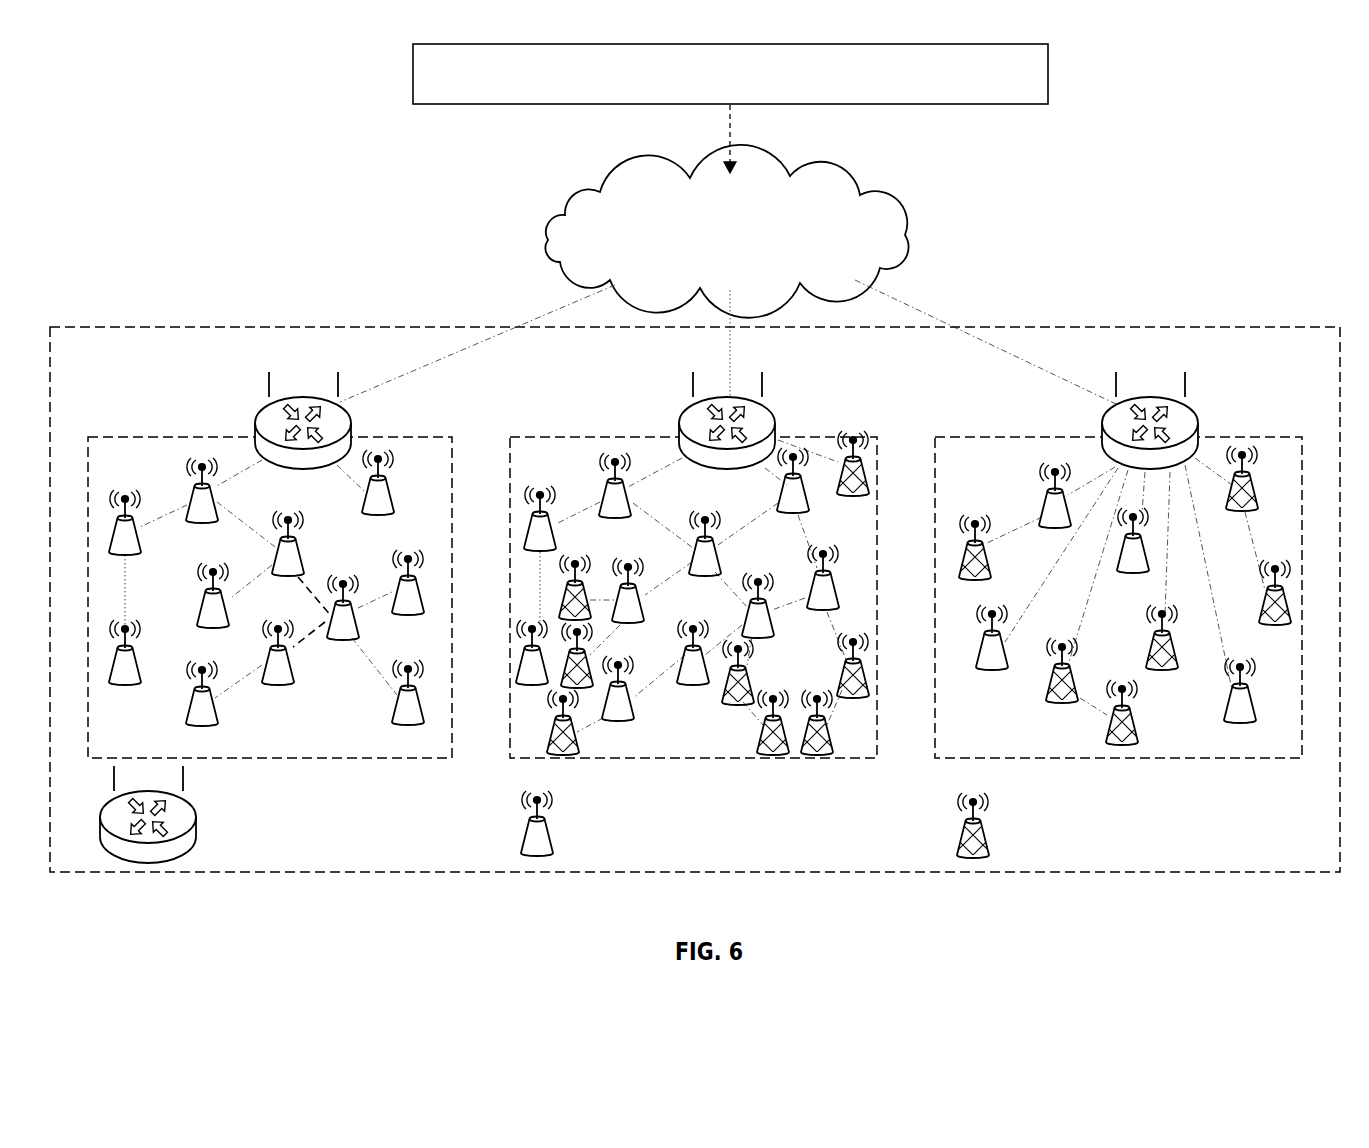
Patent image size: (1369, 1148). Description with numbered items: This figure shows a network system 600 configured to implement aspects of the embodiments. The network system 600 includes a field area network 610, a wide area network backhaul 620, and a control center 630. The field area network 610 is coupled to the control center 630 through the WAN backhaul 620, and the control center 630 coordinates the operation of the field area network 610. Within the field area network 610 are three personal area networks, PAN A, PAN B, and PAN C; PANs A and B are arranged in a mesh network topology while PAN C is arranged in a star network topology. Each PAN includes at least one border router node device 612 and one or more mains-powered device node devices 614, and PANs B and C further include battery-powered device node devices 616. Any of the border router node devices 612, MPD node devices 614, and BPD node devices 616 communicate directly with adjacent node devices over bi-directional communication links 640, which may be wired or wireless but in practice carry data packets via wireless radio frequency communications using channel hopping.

The network system 600 is at (701, 459).
The field area network 610 is at (355, 361).
The border router node device 612 is at (197, 832).
The mains-powered device (MPD) node device 614 is at (550, 833).
The battery-powered device (BPD) node device 616 is at (987, 835).
The wide area network (WAN) backhaul 620 is at (845, 242).
The control center 630 is at (862, 87).
The bi-directional communication link 640 is at (304, 640).